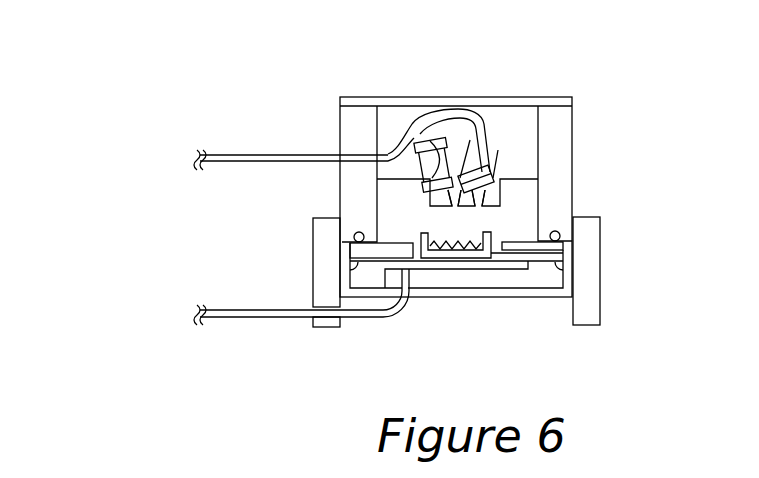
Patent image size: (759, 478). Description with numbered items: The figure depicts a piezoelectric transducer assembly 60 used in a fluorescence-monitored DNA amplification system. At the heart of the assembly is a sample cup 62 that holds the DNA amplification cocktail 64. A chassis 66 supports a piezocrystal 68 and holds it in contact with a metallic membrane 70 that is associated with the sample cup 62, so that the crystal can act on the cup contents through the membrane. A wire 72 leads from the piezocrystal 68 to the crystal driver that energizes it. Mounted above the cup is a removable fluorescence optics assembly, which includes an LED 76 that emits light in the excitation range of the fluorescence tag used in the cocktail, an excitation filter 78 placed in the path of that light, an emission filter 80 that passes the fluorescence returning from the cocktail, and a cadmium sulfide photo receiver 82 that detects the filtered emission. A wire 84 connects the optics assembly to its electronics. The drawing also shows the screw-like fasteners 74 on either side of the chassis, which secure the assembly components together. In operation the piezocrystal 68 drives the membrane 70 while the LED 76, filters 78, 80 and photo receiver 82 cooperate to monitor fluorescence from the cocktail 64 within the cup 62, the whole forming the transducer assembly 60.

The piezoelectric transducer assembly 60 is at (630, 82).
The sample cup 62 is at (563, 250).
The DNA amplification cocktail 64 is at (460, 242).
The chassis 66 is at (323, 280).
The piezocrystal 68 is at (480, 266).
The metallic membrane 70 is at (538, 253).
The wire 72 is at (262, 318).
The screw 74 is at (354, 233).
The LED 76 is at (422, 124).
The excitation filter 78 is at (425, 178).
The emission filter 80 is at (497, 175).
The cadmium sulfide photo receiver 82 is at (500, 152).
The wire 84 is at (298, 151).